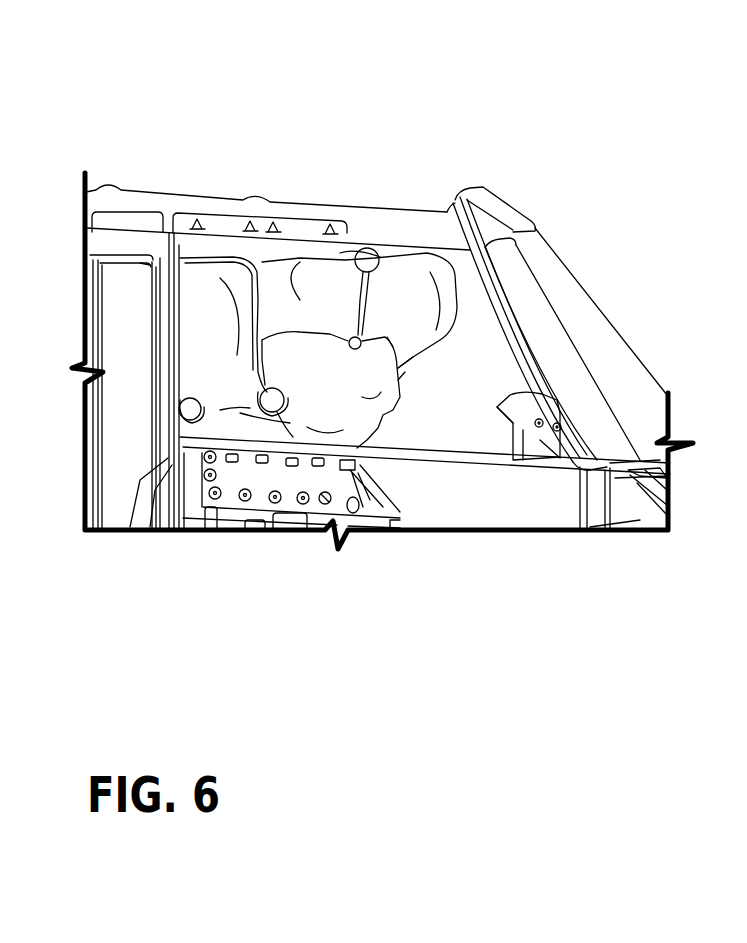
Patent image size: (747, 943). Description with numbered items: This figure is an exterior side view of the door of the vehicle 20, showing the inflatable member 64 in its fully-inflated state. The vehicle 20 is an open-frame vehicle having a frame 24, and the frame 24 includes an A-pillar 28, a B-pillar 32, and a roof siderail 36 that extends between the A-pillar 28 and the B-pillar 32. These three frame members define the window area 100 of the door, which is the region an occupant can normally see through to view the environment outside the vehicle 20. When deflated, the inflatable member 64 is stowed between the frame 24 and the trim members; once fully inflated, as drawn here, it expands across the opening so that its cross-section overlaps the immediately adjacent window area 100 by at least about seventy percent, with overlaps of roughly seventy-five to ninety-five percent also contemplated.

The vehicle 20 is at (492, 158).
The frame 24 is at (670, 510).
The A-pillar 28 is at (603, 333).
The B-pillar 32 is at (118, 276).
The roof siderail 36 is at (365, 218).
The inflatable member 64 is at (310, 288).
The window area 100 is at (440, 423).